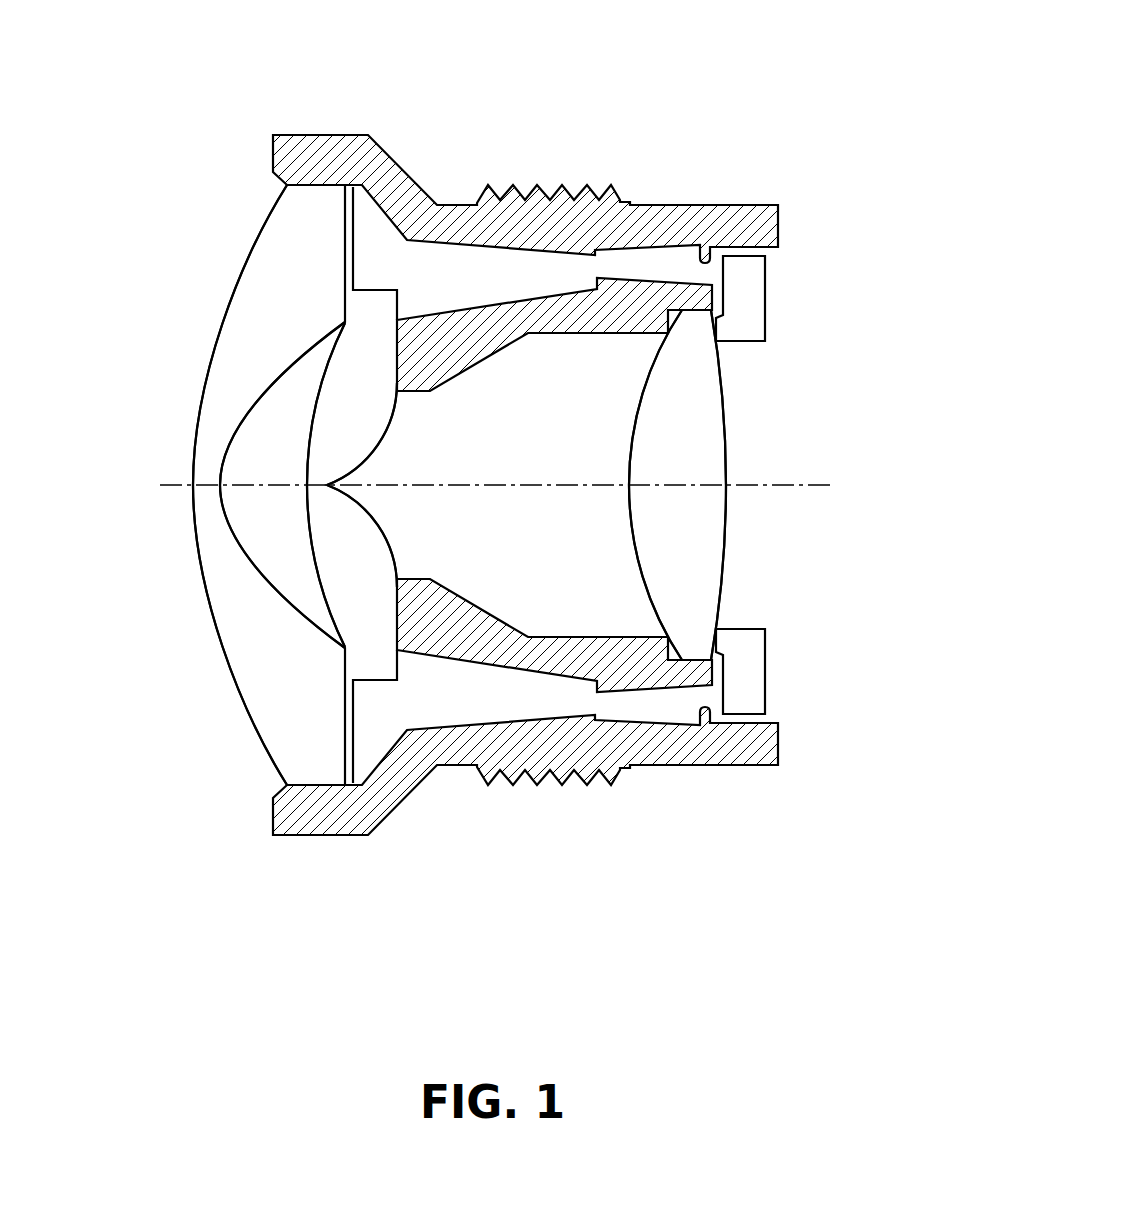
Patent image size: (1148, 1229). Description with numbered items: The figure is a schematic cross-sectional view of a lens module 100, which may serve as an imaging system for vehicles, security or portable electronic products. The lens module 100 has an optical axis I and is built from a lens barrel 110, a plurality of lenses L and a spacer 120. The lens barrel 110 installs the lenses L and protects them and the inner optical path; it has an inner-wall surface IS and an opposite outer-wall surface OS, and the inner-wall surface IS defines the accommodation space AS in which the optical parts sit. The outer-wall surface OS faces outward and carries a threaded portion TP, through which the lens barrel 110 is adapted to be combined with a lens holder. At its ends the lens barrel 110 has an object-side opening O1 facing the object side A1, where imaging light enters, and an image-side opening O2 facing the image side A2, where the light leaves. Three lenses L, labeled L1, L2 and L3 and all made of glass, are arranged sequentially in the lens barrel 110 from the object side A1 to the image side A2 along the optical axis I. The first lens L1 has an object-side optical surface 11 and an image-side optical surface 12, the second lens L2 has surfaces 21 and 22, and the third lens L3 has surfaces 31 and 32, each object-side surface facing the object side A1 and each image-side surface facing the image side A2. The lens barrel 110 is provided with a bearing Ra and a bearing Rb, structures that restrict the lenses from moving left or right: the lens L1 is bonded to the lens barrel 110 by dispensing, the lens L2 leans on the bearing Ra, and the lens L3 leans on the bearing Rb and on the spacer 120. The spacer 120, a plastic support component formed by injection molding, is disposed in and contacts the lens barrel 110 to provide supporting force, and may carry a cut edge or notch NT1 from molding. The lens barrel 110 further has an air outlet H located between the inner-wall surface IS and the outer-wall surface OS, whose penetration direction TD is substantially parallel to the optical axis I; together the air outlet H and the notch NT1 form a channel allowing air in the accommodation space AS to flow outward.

The lens module 100 is at (522, 492).
The lens barrel 110 is at (303, 150).
The spacer 120 is at (750, 286).
The object-side optical surface 11 is at (253, 236).
The image-side optical surface 12 is at (226, 443).
The object-side optical surface 21 is at (308, 517).
The image-side optical surface 22 is at (329, 465).
The object-side optical surface 31 is at (629, 515).
The image-side optical surface 32 is at (725, 464).
The first lens L1 is at (317, 768).
The second lens L2 is at (378, 657).
The third lens L3 is at (692, 645).
The lens L is at (97, 905).
The inner-wall surface IS is at (352, 222).
The outer-wall surface OS is at (410, 170).
The threaded portion TP is at (490, 183).
The penetration direction TD is at (494, 293).
The air outlet H is at (398, 268).
The bearing Ra is at (430, 355).
The bearing Rb is at (598, 341).
The accommodation space AS is at (555, 567).
The notch NT1 is at (764, 252).
The object-side opening O1 is at (273, 797).
The image-side opening O2 is at (780, 243).
The optical axis I is at (160, 484).
The object side A1 is at (178, 42).
The image side A2 is at (907, 42).